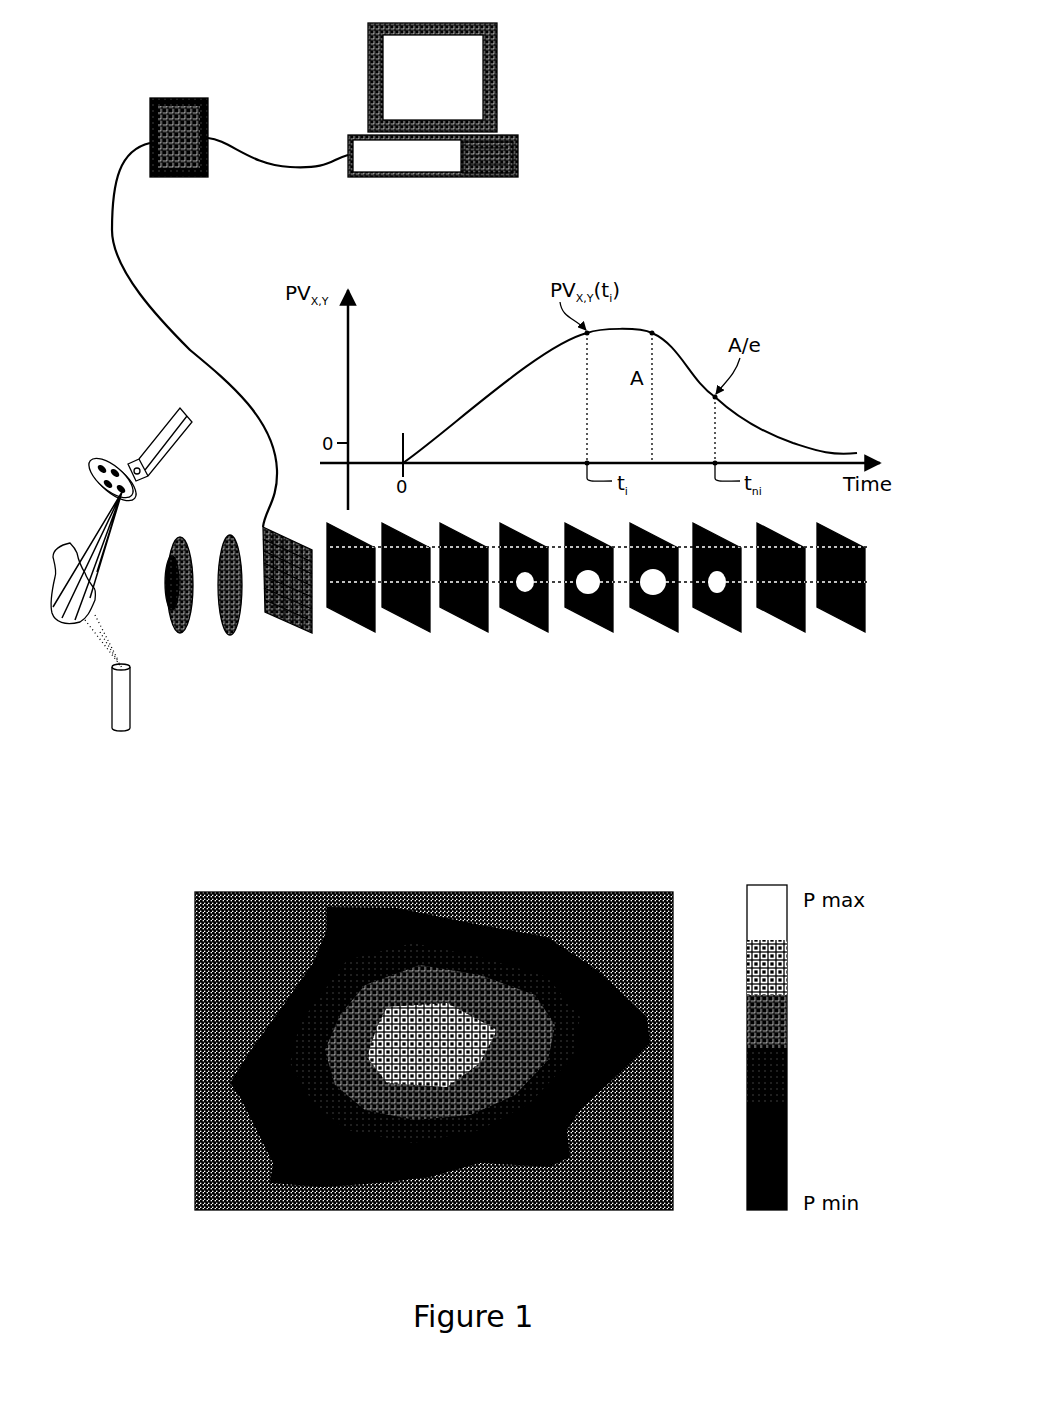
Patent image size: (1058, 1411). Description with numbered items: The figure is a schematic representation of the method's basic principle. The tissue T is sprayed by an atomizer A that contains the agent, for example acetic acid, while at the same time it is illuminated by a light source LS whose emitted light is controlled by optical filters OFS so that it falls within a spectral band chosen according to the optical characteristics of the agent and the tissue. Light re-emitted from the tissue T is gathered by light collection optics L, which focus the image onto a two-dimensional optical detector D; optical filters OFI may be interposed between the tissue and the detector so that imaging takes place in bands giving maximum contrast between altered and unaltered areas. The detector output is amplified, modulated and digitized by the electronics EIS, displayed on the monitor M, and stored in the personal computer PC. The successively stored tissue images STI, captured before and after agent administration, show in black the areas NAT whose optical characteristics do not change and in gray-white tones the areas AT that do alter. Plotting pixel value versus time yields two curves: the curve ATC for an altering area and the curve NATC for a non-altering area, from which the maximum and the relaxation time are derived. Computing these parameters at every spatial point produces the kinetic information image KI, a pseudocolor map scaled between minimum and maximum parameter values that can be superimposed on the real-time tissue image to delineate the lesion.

The electronics EIS is at (150, 107).
The monitor M is at (496, 107).
The personal computer PC is at (519, 155).
The light source LS is at (165, 430).
The optical filters for the source OFS is at (95, 452).
The tissue T is at (72, 545).
The light collection optics L is at (180, 537).
The optical filters for imaging OFI is at (228, 540).
The two-dimensional optical detector D is at (308, 547).
The atomizer A is at (122, 700).
The non-altering tissue areas NAT is at (828, 442).
The altering tissue areas AT is at (852, 453).
The non-alteration curve NATC is at (904, 548).
The alteration curve ATC is at (896, 583).
The successively stored tissue images STI is at (868, 657).
The kinetic information image KI is at (434, 1026).